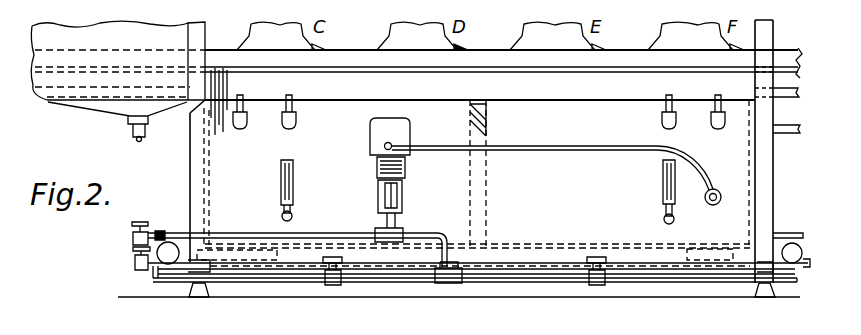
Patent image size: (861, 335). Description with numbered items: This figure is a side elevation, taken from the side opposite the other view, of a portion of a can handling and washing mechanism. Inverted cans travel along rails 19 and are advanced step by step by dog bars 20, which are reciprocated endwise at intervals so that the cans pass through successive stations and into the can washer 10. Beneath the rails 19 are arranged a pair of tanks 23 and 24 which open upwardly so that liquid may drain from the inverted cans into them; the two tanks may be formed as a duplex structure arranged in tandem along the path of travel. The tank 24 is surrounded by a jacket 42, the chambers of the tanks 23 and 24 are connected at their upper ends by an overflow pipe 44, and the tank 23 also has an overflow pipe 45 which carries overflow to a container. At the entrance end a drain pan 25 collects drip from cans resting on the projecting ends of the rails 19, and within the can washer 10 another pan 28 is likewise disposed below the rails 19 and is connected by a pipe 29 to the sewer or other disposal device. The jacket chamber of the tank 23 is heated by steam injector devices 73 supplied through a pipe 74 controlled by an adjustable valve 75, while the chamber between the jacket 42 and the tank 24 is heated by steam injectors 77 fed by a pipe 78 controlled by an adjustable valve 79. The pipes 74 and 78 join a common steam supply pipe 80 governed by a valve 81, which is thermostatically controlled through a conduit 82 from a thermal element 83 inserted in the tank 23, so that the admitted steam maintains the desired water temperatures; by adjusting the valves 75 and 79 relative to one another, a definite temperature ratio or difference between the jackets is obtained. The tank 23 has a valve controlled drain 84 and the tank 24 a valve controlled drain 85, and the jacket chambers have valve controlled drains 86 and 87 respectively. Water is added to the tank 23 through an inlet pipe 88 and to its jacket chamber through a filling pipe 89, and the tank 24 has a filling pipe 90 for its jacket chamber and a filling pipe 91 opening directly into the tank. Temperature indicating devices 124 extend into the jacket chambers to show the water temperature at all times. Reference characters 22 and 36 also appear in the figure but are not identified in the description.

The can washer 10 is at (118, 60).
The rails 19 is at (110, 44).
The dog bars 20 is at (133, 76).
The carrier foot 22 is at (470, 50).
The tank 23 is at (485, 203).
The tank 24 is at (213, 163).
The drain pan 25 is at (776, 90).
The pan 28 is at (107, 107).
The pipe 29 is at (133, 134).
The end column 36 is at (778, 158).
The jacket 42 is at (192, 165).
The overflow pipe 44 is at (487, 141).
The overflow pipe 45 is at (787, 119).
The steam injector devices 73 is at (717, 280).
The pipe 74 is at (521, 278).
The adjustable valve 75 is at (594, 283).
The steam injectors 77 is at (187, 253).
The pipe 78 is at (263, 279).
The adjustable valve 79 is at (328, 283).
The common steam supply pipe 80 is at (427, 231).
The valve 81 is at (378, 230).
The conduit 82 is at (580, 142).
The thermal element 83 is at (717, 190).
The valve controlled drain 84 is at (785, 230).
The valve controlled drain 85 is at (152, 222).
The valve controlled drain 86 is at (800, 265).
The valve controlled drain 87 is at (150, 266).
The inlet pipe 88 is at (661, 113).
The filling pipe 89 is at (713, 113).
The filling pipe 90 is at (297, 116).
The filling pipe 91 is at (247, 117).
The temperature indicating devices 124 is at (281, 188).